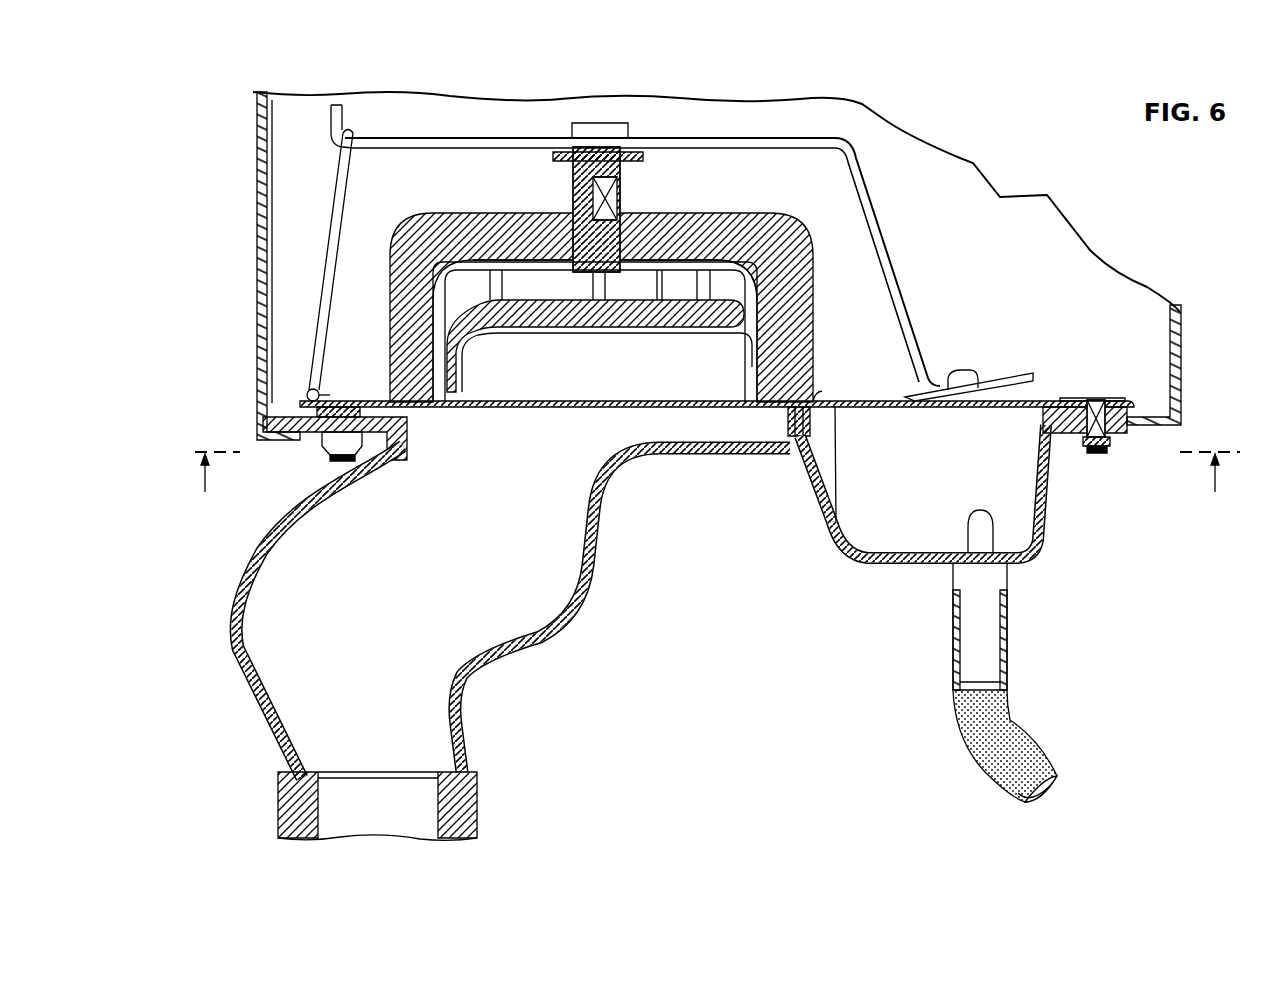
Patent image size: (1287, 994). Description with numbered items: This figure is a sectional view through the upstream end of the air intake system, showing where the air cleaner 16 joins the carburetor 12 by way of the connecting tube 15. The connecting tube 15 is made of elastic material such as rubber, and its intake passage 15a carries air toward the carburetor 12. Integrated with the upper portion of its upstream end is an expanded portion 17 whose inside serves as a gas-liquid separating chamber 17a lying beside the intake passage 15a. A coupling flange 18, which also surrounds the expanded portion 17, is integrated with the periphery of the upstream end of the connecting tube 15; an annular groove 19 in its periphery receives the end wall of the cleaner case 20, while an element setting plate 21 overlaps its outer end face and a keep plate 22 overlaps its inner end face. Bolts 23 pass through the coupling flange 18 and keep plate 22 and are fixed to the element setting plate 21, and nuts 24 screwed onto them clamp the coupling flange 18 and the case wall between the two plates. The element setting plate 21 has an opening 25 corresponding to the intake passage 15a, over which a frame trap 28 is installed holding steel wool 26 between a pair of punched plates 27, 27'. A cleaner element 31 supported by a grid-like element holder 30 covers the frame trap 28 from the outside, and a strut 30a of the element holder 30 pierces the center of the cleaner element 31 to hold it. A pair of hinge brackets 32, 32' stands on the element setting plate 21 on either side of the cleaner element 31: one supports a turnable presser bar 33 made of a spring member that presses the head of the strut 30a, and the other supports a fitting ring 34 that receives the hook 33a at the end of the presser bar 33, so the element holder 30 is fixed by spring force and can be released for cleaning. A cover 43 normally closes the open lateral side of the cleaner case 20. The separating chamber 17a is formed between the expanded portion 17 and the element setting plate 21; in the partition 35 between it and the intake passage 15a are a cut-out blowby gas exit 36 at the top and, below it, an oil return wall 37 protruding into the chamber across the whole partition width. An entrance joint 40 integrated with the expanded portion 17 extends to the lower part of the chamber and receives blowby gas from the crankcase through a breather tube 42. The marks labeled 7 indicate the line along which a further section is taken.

The carburetor 12 is at (480, 830).
The connecting tube 15 is at (236, 600).
The intake passage 15a is at (385, 592).
The air cleaner 16 is at (893, 119).
The expanded portion 17 is at (1043, 535).
The gas-liquid separating chamber 17a is at (915, 482).
The coupling flange 18 is at (1123, 405).
The annular groove 19 is at (1087, 425).
The cleaner case 20 is at (1180, 338).
The element setting plate 21 is at (852, 401).
The keep plate 22 is at (1118, 440).
The bolt 23 is at (1098, 398).
The nut 24 is at (1080, 440).
The opening 25 is at (457, 368).
The steel wool 26 is at (650, 340).
The punched plate 27 is at (607, 362).
The punched plate 27' is at (600, 234).
The frame trap 28 is at (540, 332).
The element holder 30 is at (728, 262).
The strut 30a is at (625, 165).
The cleaner element 31 is at (530, 213).
The hinge bracket 32 is at (969, 352).
The hinge bracket 32' is at (339, 359).
The presser bar 33 is at (885, 245).
The hook 33a is at (331, 122).
The fitting ring 34 is at (343, 233).
The partition 35 is at (788, 429).
The blowby gas exit 36 is at (818, 398).
The oil return wall 37 is at (840, 448).
The entrance joint 40 is at (993, 577).
The breather tube 42 is at (1030, 752).
The cover 43 is at (257, 330).
The section line 7- 7 is at (703, 475).